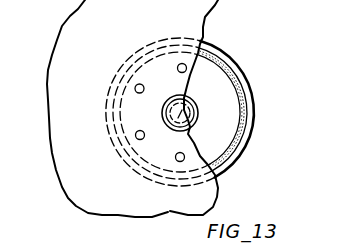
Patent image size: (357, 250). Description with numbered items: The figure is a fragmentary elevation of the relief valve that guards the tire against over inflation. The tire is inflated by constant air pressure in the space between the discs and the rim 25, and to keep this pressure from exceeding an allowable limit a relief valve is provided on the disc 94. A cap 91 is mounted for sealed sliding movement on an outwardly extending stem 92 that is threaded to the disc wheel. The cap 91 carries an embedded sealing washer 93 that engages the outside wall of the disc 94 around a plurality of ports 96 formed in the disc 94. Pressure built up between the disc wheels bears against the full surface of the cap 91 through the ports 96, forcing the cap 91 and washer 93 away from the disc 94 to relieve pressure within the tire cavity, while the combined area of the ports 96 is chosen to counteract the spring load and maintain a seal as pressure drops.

The rim 25 is at (211, 12).
The cap 91 is at (248, 78).
The stem 92 is at (180, 129).
The sealing washer 93 is at (243, 111).
The disc 94 is at (68, 100).
The ports 96 is at (178, 69).